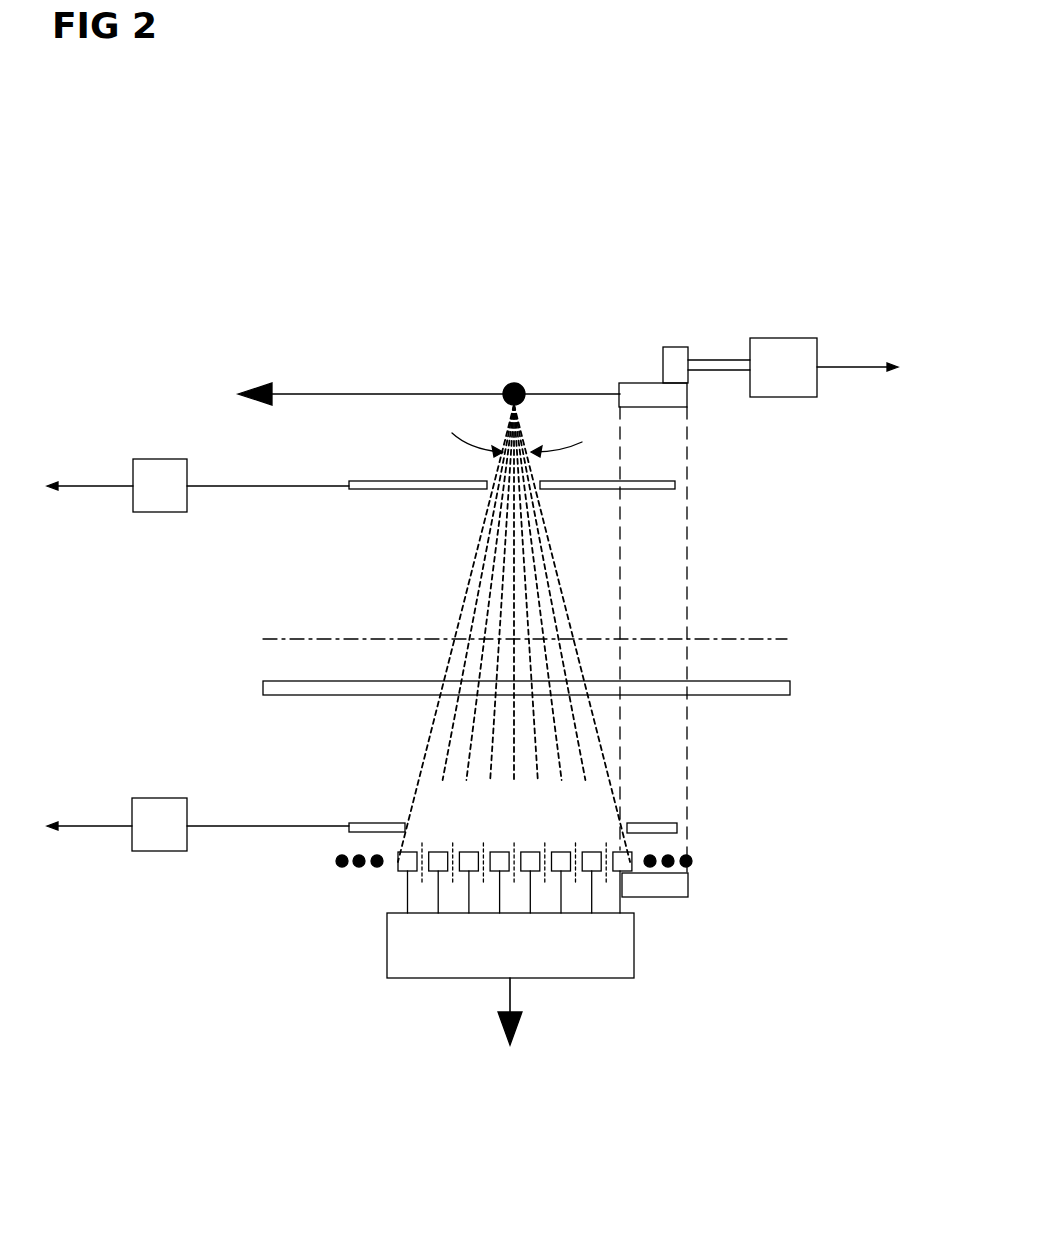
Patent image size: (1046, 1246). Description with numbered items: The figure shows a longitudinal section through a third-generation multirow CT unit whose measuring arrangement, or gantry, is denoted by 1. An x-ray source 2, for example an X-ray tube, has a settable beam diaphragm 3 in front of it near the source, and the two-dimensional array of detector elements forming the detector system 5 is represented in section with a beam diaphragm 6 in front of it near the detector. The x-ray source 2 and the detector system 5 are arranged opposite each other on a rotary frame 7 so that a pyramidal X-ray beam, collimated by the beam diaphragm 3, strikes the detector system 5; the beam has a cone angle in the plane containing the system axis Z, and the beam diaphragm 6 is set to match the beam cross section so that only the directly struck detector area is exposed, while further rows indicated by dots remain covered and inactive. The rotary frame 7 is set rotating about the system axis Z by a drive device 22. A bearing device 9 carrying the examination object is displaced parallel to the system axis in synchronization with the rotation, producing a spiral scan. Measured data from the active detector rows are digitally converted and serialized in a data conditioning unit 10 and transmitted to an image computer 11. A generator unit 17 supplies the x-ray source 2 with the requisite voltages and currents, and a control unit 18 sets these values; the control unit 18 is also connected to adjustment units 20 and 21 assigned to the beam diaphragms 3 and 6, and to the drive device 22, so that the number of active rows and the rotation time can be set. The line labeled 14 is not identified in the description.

The measuring arrangement 1 is at (678, 286).
The x-ray source 2 is at (508, 386).
The beam diaphragm 3 is at (372, 478).
The detector system 5 is at (752, 770).
The beam diaphragm 6 is at (372, 822).
The rotary frame 7 is at (640, 397).
The bearing device 9 is at (328, 695).
The data conditioning unit 10 is at (612, 938).
The image computer 11 is at (500, 1026).
The system axis 14 is at (742, 638).
The generator unit 17 is at (429, 363).
The control unit 18 is at (83, 486).
The adjustment unit 20 is at (157, 500).
The adjustment unit 21 is at (161, 840).
The drive device 22 is at (780, 355).